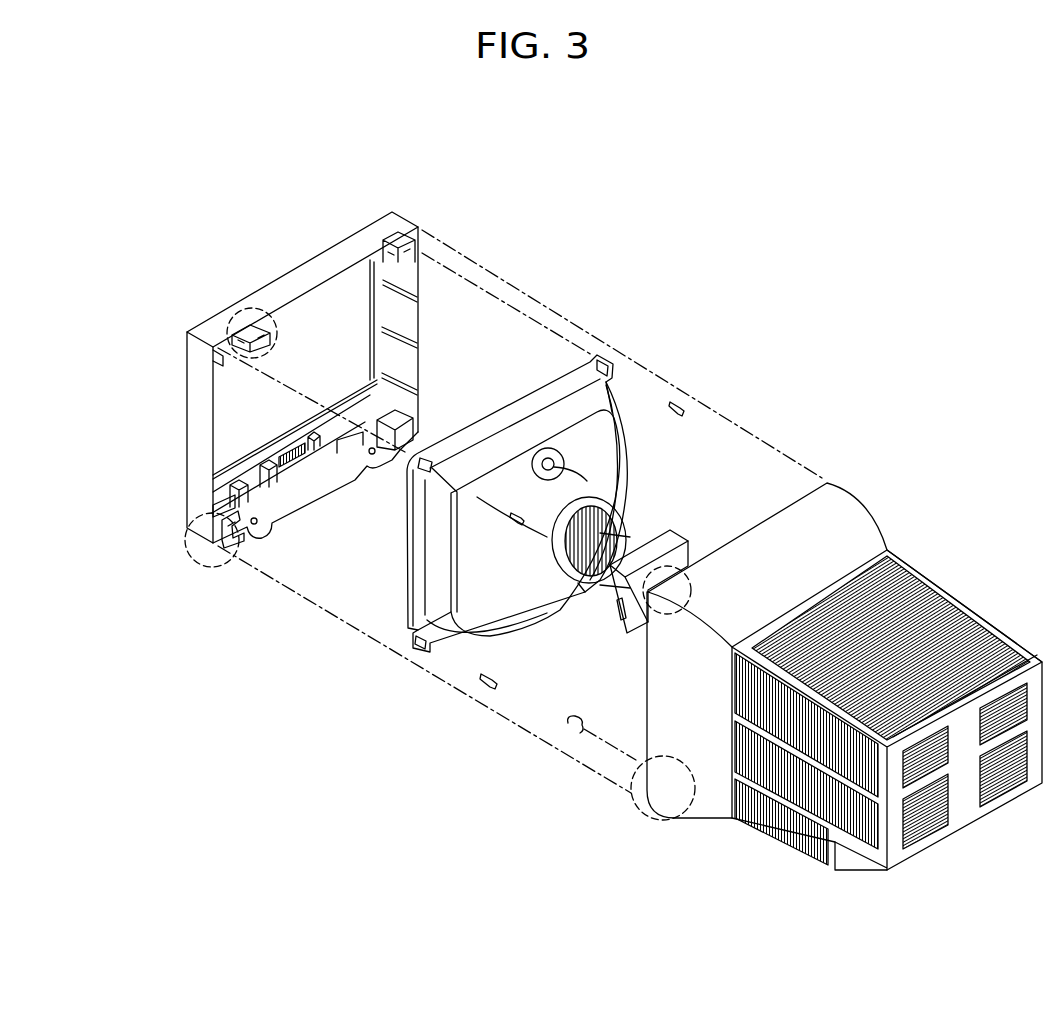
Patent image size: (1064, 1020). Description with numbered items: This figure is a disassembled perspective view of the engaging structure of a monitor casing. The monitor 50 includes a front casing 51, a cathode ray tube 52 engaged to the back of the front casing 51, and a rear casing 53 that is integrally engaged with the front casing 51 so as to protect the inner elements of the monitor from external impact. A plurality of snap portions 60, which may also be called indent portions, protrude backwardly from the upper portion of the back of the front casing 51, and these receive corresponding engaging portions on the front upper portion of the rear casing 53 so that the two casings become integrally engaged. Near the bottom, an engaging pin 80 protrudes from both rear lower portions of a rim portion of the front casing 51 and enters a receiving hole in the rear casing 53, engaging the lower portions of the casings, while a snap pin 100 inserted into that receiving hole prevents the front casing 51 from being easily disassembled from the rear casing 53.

The monitor 50 is at (297, 169).
The front casing 51 is at (187, 464).
The cathode ray tube 52 is at (503, 622).
The rear casing 53 is at (778, 832).
The snap portions 60 is at (393, 240).
The engaging pin 80 is at (230, 546).
The snap pin 100 is at (565, 725).